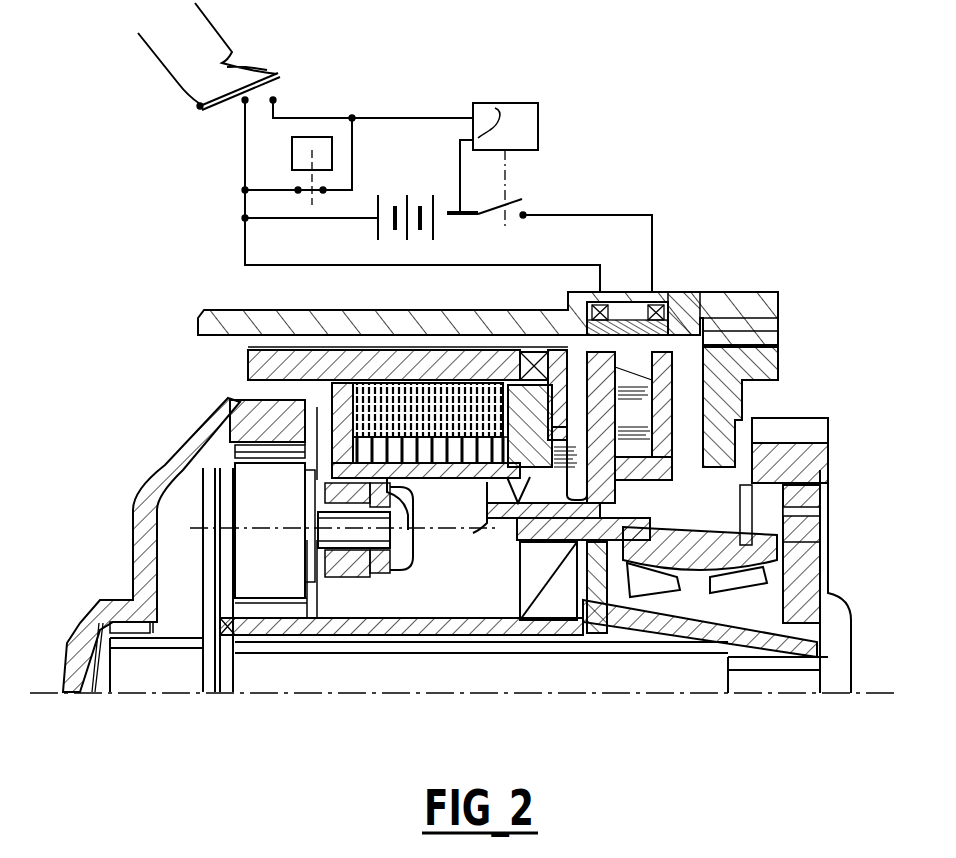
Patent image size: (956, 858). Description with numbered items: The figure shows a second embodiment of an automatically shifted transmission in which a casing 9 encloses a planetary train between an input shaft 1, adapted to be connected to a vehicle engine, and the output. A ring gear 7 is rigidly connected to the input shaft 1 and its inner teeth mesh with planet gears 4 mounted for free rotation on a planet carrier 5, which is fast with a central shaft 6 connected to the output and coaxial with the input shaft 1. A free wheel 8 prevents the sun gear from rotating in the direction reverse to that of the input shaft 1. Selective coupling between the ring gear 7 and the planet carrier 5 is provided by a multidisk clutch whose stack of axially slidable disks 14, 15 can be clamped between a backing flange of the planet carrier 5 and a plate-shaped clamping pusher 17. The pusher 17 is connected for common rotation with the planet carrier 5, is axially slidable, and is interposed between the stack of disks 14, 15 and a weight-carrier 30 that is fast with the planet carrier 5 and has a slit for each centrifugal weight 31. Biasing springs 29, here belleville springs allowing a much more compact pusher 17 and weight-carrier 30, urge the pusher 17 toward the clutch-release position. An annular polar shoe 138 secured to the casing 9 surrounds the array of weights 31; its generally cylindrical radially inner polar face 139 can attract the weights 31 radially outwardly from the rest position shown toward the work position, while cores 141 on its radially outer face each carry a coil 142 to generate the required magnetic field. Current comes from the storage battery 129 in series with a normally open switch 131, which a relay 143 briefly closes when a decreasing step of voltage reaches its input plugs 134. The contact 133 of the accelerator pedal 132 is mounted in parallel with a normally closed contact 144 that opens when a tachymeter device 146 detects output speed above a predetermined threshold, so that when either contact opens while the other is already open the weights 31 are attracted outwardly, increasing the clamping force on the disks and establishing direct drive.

The input shaft 1 is at (108, 600).
The planet gears 4 is at (263, 493).
The planet carrier 5 is at (198, 575).
The central shaft 6 is at (398, 684).
The ring gear 7 is at (233, 400).
The free wheel 8 is at (533, 577).
The casing 9 is at (428, 322).
The disks 14 is at (392, 380).
The disks 15 is at (430, 366).
The clamping pusher 17 is at (560, 360).
The biasing springs 29 is at (490, 512).
The weight-carrier 30 is at (622, 482).
The centrifugal weights 31 is at (705, 410).
The storage battery 129 is at (388, 234).
The switch 131 is at (514, 221).
The accelerator pedal 132 is at (277, 76).
The contact 133 is at (263, 100).
The input plugs 134 is at (476, 124).
The annular polar shoe 138 is at (697, 292).
The polar face 139 is at (660, 402).
The cores 141 is at (627, 308).
The coil 142 is at (674, 302).
The relay 143 is at (540, 128).
The contact 144 is at (302, 187).
The tachymeter device 146 is at (292, 157).